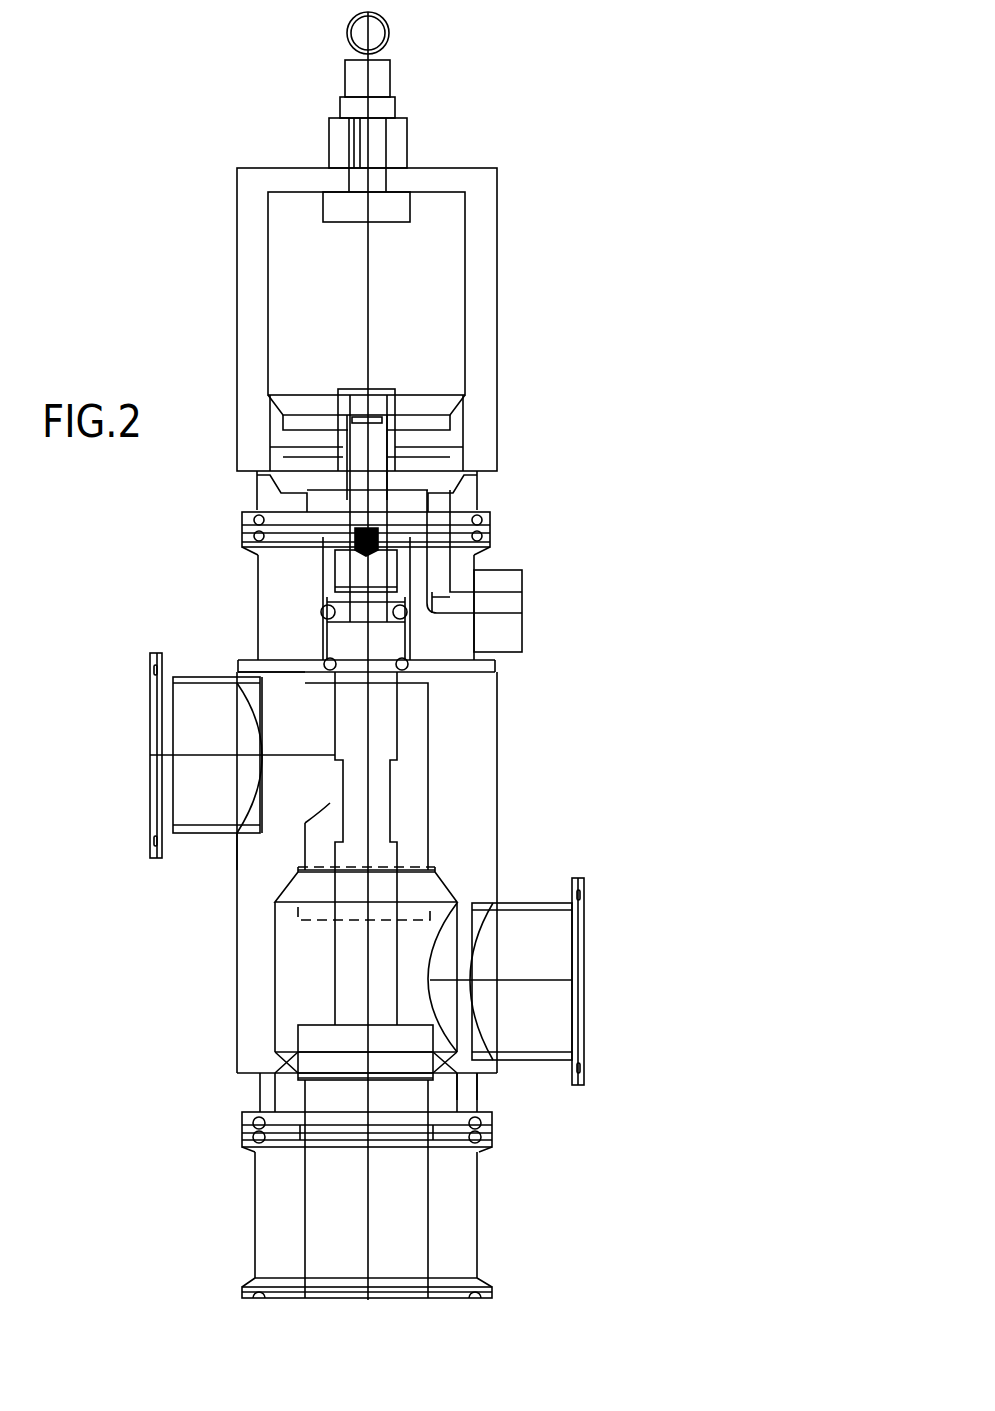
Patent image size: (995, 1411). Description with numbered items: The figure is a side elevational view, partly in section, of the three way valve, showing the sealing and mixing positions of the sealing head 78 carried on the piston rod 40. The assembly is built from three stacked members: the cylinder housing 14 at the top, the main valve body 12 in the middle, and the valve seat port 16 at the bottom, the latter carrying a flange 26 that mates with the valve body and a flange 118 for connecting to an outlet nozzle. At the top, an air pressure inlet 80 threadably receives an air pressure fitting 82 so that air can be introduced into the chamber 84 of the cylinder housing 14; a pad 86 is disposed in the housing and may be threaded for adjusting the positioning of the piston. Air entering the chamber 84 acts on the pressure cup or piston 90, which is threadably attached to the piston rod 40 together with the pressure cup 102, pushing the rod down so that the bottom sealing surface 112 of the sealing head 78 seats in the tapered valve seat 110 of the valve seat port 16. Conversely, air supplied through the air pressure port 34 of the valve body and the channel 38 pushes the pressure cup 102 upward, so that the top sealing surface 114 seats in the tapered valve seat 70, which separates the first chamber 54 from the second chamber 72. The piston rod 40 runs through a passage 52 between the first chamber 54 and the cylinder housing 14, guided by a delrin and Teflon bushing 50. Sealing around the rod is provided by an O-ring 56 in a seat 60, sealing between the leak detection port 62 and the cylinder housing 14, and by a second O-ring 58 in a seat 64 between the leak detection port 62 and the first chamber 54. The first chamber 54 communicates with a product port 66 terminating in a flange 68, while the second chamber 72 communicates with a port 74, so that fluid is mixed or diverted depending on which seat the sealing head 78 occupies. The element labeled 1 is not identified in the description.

The ring handle 1 is at (384, 36).
The air pressure fitting 82 is at (386, 77).
The air pressure inlet 80 is at (408, 126).
The pad 86 is at (330, 210).
The chamber 84 is at (440, 240).
The cylinder housing 14 is at (485, 285).
The pressure cup or piston 90 is at (470, 413).
The pressure cup 102 is at (472, 492).
The channel 38 is at (440, 575).
The air pressure port 34 is at (520, 562).
The seat 60 is at (440, 605).
The bushing 50 is at (330, 568).
The passage 52 is at (328, 608).
The leak detection port 62 is at (253, 643).
The O-ring 56 is at (412, 604).
The second O-ring 58 is at (440, 673).
The first chamber 54 is at (415, 708).
The piston rod 40 is at (385, 738).
The seat 64 is at (367, 723).
The main valve body 12 is at (257, 870).
The port 66 is at (190, 803).
The flange 68 is at (150, 657).
The top sealing surface 114 is at (433, 863).
The sealing head 78 is at (440, 862).
The tapered valve seat 70 is at (438, 893).
The second chamber 72 is at (290, 980).
The tapered valve seat 110 is at (307, 1062).
The bottom sealing surface 112 is at (440, 1090).
The port 74 is at (542, 927).
The flange 26 is at (483, 1147).
The valve seat port 16 is at (453, 1208).
The flange 118 is at (490, 1280).